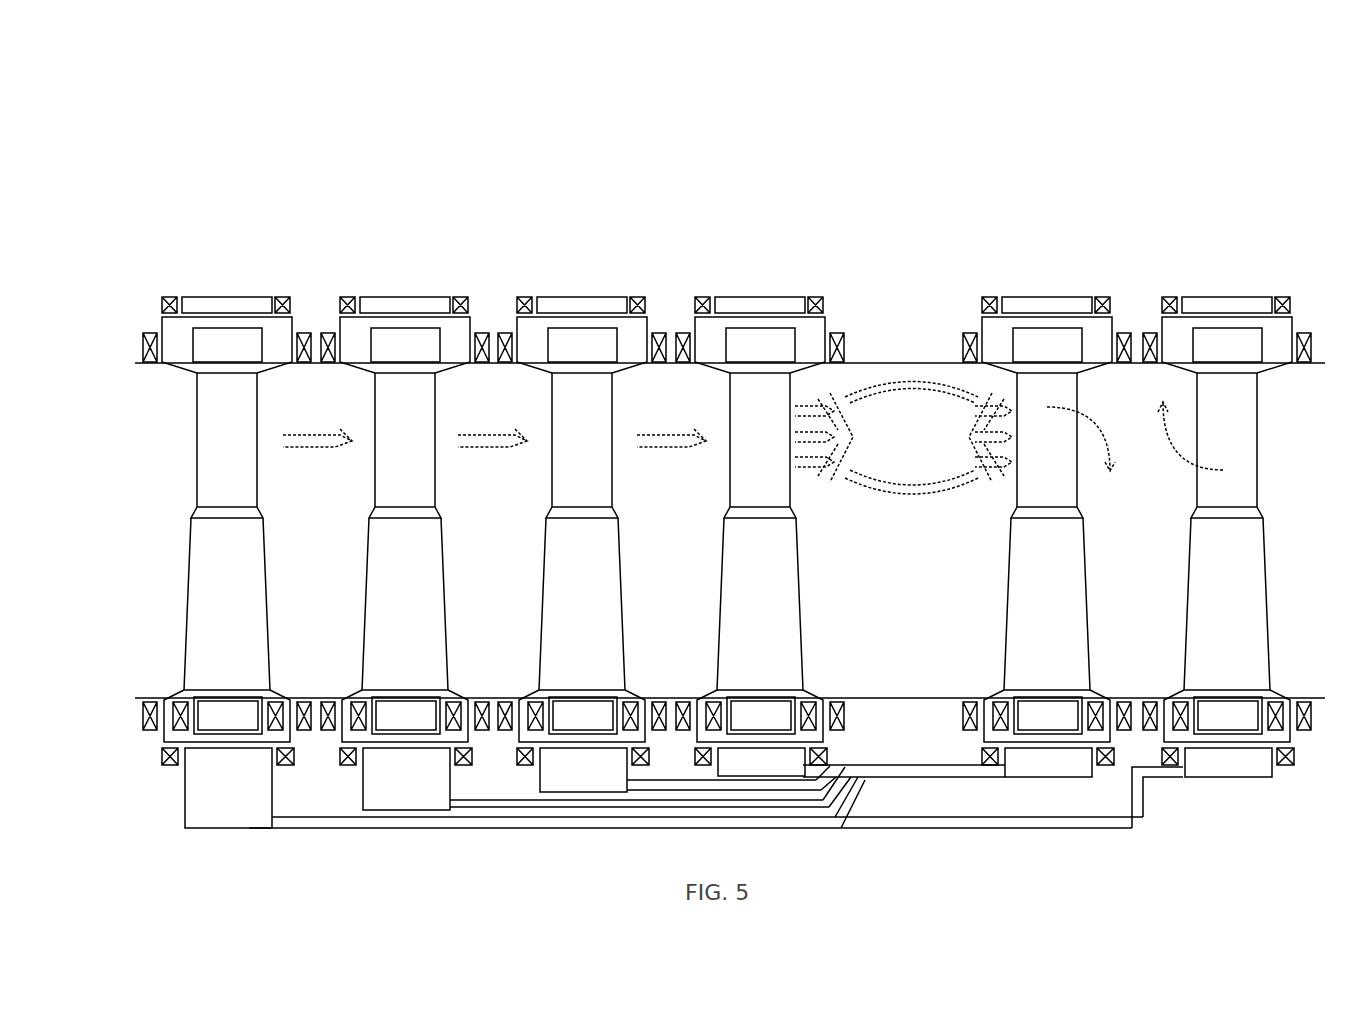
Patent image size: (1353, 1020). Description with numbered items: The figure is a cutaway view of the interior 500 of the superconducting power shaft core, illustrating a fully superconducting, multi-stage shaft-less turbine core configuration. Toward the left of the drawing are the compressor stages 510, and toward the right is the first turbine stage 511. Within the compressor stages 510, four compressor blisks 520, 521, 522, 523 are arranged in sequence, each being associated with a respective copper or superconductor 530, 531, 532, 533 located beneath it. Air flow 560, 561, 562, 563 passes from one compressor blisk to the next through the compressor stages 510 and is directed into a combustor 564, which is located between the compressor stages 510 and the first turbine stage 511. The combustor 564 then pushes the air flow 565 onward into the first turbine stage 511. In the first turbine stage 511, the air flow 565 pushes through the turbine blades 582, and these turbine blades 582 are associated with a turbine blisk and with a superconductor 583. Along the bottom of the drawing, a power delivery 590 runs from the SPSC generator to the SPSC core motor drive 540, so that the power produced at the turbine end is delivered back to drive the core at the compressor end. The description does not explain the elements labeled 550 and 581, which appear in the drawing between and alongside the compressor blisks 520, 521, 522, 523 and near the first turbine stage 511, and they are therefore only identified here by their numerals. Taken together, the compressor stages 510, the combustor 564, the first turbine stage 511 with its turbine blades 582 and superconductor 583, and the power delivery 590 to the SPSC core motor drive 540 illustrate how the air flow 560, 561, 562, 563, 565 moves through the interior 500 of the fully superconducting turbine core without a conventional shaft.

The interior of the superconducting power shaft 500 is at (964, 116).
The compressor stages 510 is at (125, 285).
The first turbine stage 511 is at (982, 260).
The compressor blisk 520 is at (207, 585).
The compressor blisk 521 is at (385, 578).
The compressor blisk 522 is at (563, 580).
The compressor blisk 523 is at (742, 585).
The copper or superconductor 530 is at (228, 716).
The copper or superconductor 531 is at (406, 716).
The copper or superconductor 532 is at (583, 716).
The copper or superconductor 533 is at (761, 716).
The SPSC core motor drive 540 is at (424, 792).
The seals 550 is at (669, 681).
The air flow 560 is at (317, 422).
The air flow 561 is at (492, 422).
The air flow 562 is at (672, 422).
The air flow 563 is at (816, 489).
The combustor 564 is at (911, 438).
The air flow 565 is at (1009, 490).
The output channels 581 is at (1193, 595).
The turbine blades 582 is at (1211, 491).
The superconductor 583 is at (1138, 716).
The power delivery 590 is at (1163, 839).